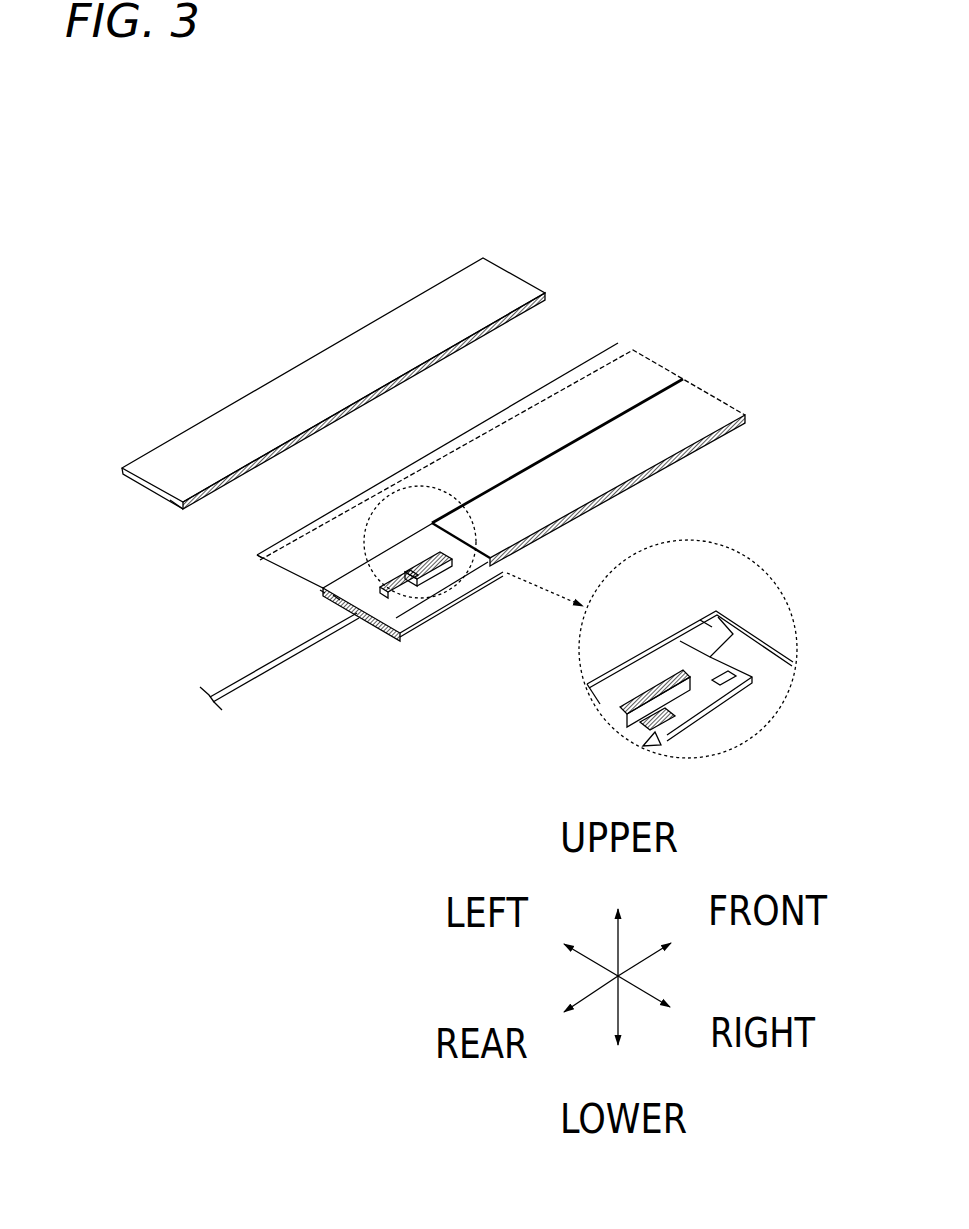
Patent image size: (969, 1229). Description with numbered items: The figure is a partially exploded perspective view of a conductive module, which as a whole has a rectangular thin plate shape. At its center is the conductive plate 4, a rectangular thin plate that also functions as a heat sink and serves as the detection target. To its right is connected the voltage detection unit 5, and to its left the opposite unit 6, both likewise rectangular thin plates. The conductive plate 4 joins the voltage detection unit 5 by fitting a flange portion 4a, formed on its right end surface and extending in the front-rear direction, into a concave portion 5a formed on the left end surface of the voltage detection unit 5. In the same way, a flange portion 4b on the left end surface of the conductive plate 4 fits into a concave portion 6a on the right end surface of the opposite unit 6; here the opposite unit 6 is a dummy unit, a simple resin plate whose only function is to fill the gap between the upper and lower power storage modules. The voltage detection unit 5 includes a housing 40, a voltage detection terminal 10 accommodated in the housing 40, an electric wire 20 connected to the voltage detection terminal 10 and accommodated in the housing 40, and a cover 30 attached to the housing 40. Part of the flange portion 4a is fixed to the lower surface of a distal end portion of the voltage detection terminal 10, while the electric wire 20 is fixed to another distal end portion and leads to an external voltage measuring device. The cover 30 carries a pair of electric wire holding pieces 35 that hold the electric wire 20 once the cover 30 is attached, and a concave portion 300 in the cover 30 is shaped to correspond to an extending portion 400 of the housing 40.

The opposite unit 6 is at (517, 268).
The concave portion 6a is at (174, 506).
The conductive plate 4 is at (652, 355).
The flange portion 4a is at (322, 593).
The flange portion 4b is at (257, 557).
The voltage detection unit 5 is at (708, 388).
The concave portion 5a is at (337, 598).
The housing 40 is at (723, 441).
The voltage detection terminal 10 is at (703, 631).
The cover 30 is at (424, 629).
The electric wire holding piece 35 is at (640, 714).
The concave portion 300 is at (403, 635).
The extending portion 400 is at (357, 618).
The electric wire 20 is at (279, 671).